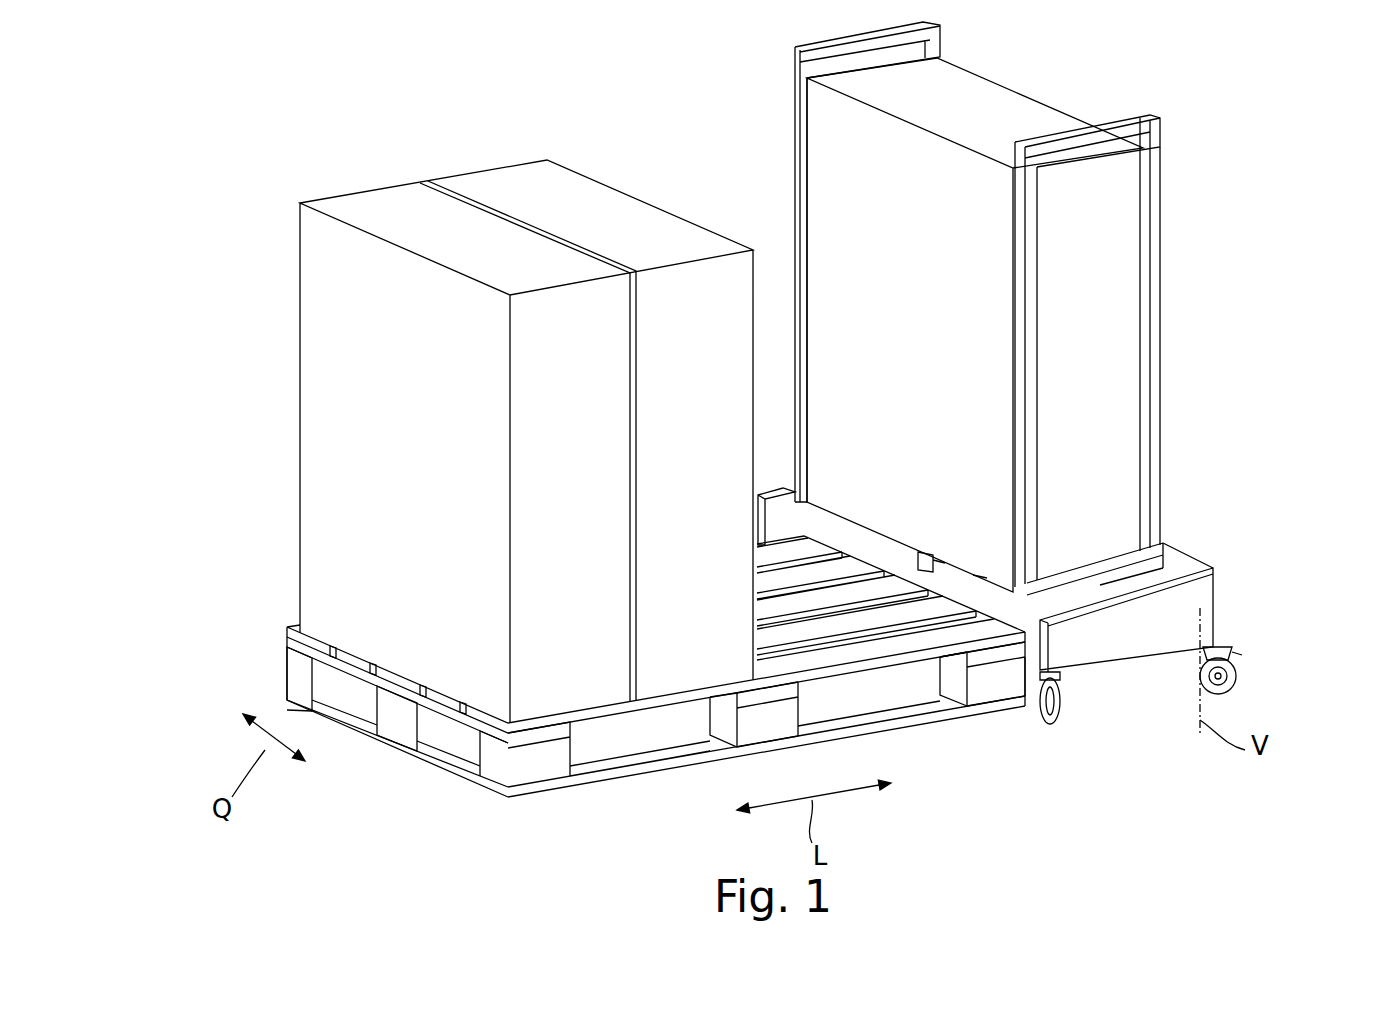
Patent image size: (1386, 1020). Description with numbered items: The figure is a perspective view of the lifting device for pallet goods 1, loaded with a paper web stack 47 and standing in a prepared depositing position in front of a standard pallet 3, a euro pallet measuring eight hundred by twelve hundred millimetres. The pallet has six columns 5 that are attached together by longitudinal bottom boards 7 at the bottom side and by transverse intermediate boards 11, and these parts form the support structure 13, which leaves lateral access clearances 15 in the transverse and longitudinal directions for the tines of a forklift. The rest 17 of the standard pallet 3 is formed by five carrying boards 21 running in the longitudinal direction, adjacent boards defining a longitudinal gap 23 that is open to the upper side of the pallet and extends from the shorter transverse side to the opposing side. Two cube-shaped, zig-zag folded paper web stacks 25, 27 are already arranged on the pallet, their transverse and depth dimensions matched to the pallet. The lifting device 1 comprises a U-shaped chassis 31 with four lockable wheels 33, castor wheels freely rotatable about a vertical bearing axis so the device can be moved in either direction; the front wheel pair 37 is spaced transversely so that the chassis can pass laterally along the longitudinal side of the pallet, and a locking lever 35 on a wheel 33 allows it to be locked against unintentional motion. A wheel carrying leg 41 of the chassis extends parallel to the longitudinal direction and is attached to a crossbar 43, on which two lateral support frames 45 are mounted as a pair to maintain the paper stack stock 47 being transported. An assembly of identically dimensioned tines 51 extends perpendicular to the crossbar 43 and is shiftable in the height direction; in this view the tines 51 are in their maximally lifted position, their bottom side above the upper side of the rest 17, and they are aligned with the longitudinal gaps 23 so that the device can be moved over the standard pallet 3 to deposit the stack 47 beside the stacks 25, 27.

The lifting device for pallet goods 1 is at (1186, 284).
The standard pallet 3 is at (388, 762).
The columns 5 is at (298, 678).
The longitudinal bottom boards 7 is at (823, 735).
The transverse intermediate boards 11 is at (333, 683).
The support structure 13 is at (438, 771).
The lateral access clearances 15 is at (473, 757).
The rest 17 is at (997, 642).
The carrying boards 21 is at (773, 557).
The longitudinal gap 23 is at (877, 633).
The paper web stack 25 is at (322, 293).
The paper web stack 27 is at (497, 185).
The chassis 31 is at (1223, 550).
The lockable wheels 33 is at (1256, 654).
The locking lever 35 is at (1248, 628).
The front wheel pair 37 is at (1050, 720).
The wheel carrying leg 41 is at (1190, 595).
The crossbar 43 is at (1170, 557).
The lateral support frames 45 is at (1163, 318).
The paper web stack 47 is at (998, 100).
The tines 51 is at (943, 563).